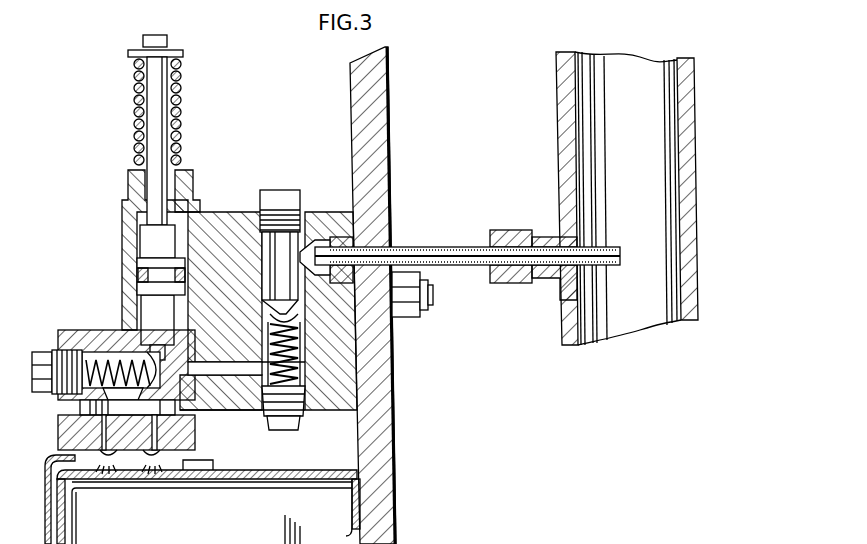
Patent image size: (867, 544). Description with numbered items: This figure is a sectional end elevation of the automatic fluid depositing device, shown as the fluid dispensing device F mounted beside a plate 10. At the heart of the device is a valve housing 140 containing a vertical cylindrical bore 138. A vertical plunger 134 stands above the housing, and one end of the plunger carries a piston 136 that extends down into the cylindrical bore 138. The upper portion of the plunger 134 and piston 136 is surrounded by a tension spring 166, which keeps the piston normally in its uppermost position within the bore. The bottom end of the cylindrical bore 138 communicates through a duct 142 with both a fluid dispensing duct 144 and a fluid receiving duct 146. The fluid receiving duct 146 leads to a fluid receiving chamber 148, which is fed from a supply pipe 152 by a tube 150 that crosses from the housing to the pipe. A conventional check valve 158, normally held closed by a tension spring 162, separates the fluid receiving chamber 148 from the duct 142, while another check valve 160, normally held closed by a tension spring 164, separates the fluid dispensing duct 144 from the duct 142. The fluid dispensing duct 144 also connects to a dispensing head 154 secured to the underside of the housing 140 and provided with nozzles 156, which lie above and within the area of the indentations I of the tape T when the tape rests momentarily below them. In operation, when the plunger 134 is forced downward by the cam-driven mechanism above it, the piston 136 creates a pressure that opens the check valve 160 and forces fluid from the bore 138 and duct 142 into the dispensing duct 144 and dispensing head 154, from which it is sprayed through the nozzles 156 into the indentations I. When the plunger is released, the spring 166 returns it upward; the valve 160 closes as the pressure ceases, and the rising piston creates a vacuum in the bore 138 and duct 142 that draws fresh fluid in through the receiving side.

The mounting plate 10 is at (372, 70).
The vertical plunger 134 is at (157, 97).
The tension spring 166 is at (180, 123).
The valve housing 140 is at (233, 213).
The fluid receiving chamber 148 is at (297, 242).
The tube 150 is at (428, 258).
The supply pipe 152 is at (632, 318).
The piston 136 is at (145, 287).
The vertical cylindrical bore 138 is at (125, 328).
The tension spring 164 is at (80, 352).
The fluid dispensing duct 144 is at (85, 406).
The dispensing head 154 is at (62, 438).
The fluid receiving duct 146 is at (300, 318).
The check valve 158 is at (295, 345).
The tension spring 162 is at (305, 392).
The check valve 160 is at (200, 396).
The duct 142 is at (252, 368).
The nozzle 156 is at (166, 457).
The fluid dispensing device F is at (105, 273).
The tape T is at (55, 460).
The indentations I is at (118, 468).